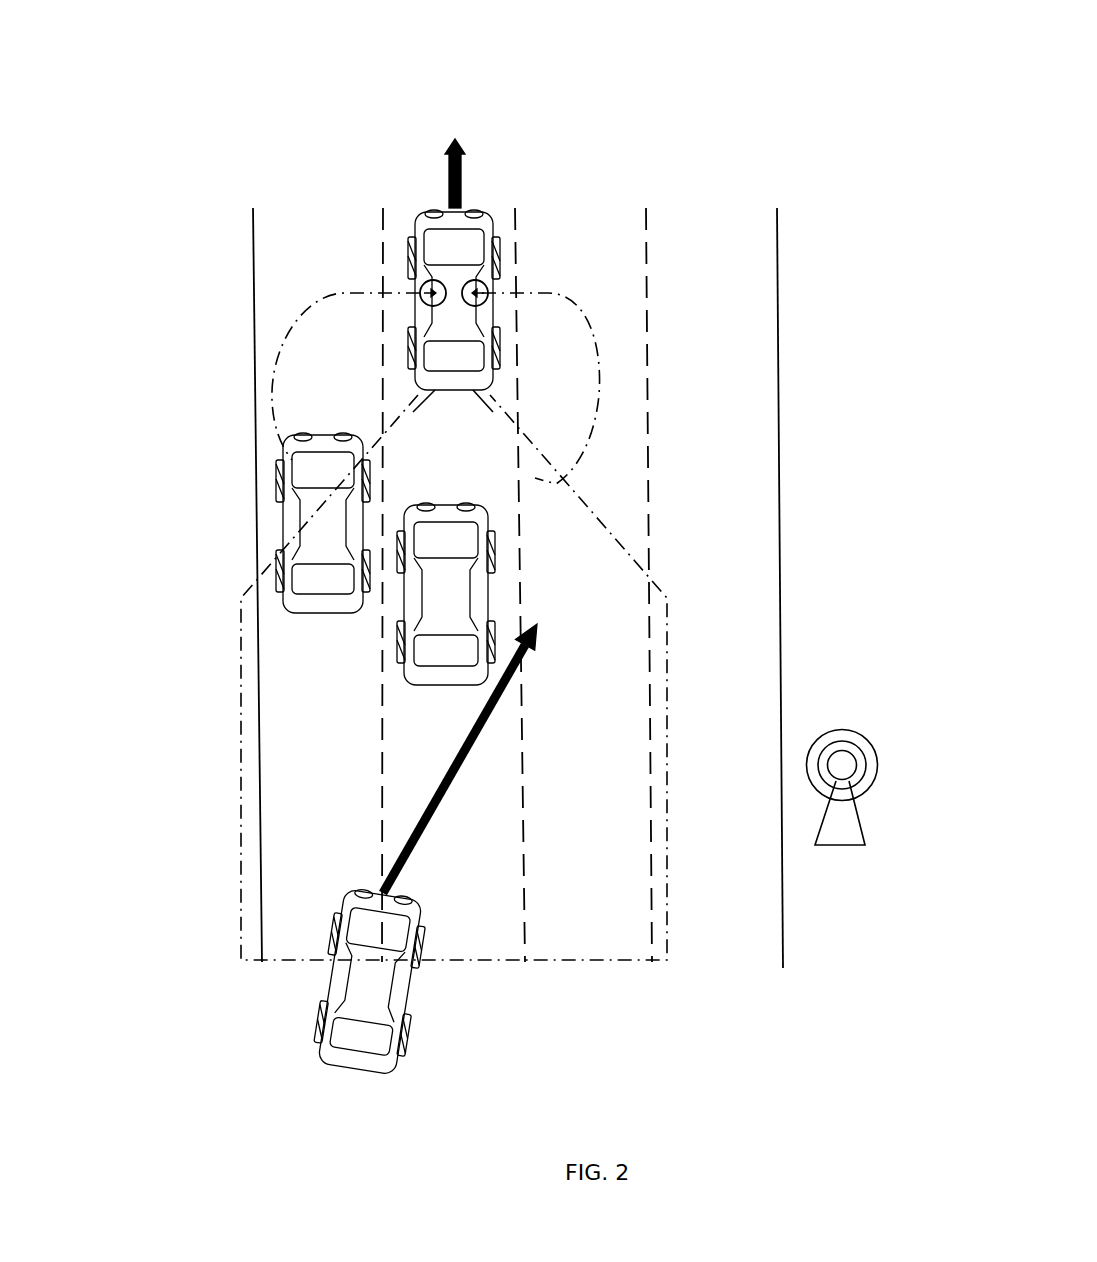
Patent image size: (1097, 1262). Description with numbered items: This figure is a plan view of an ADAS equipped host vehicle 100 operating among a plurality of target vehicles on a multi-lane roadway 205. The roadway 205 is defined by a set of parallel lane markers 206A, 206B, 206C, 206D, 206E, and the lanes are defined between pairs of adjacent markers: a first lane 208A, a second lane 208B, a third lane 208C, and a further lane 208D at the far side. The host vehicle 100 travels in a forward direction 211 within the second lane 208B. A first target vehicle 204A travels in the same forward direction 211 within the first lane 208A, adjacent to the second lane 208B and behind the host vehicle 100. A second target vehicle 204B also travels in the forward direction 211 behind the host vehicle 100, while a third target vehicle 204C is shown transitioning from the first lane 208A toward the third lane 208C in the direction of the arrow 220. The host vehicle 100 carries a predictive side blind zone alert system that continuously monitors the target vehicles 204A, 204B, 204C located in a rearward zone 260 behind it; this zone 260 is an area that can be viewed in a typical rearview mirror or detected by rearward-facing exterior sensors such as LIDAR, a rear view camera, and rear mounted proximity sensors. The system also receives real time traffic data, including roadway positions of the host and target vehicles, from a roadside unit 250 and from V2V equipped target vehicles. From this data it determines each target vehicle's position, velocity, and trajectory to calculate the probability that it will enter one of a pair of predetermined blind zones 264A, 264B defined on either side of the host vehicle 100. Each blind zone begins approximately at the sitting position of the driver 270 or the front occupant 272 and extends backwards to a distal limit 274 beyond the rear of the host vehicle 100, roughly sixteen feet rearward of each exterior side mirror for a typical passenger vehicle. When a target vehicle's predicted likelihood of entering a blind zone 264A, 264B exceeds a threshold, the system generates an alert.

The host vehicle 100 is at (461, 255).
The first target vehicle 204A is at (310, 533).
The second target vehicle 204B is at (443, 578).
The third target vehicle 204C is at (360, 1003).
The multi-lane roadway 205 is at (756, 137).
The lane marker 206A is at (253, 215).
The lane marker 206B is at (383, 215).
The lane marker 206C is at (516, 220).
The lane marker 206D is at (645, 212).
The lane marker 206E is at (779, 235).
The first lane 208A is at (302, 915).
The second lane 208B is at (466, 915).
The third lane 208C is at (598, 915).
The lane 208D is at (740, 918).
The forward direction 211 is at (445, 143).
The arrow 220 is at (466, 774).
The roadside unit 250 is at (865, 717).
The rearward zone 260 is at (672, 667).
The predetermined blind zone 264A is at (323, 350).
The predetermined blind zone 264B is at (570, 373).
The driver 270 is at (425, 288).
The front occupant 272 is at (480, 290).
The distal limit 274 is at (446, 960).